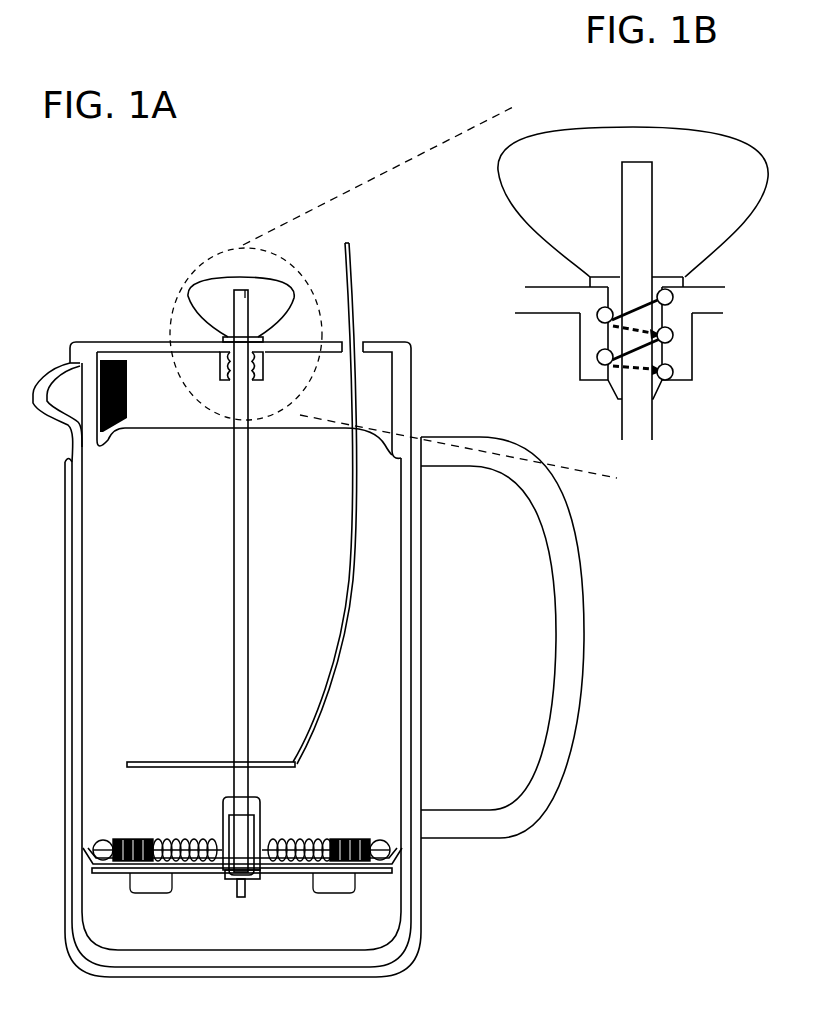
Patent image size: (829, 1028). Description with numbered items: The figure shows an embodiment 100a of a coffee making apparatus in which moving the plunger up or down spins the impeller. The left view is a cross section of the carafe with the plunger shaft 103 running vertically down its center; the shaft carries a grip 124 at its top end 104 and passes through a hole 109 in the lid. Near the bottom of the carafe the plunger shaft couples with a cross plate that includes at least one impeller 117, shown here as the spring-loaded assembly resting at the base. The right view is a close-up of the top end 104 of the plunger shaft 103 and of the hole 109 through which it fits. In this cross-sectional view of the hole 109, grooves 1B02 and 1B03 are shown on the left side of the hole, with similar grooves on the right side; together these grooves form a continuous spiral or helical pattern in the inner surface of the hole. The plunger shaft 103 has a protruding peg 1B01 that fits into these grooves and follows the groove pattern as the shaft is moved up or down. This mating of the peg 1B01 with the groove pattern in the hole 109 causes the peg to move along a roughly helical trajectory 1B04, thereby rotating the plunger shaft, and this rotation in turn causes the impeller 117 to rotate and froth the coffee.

In FIG. 1A, the embodiment 100a is at (257, 200).
In FIG. 1A, the plunger shaft 103 is at (237, 623).
In FIG. 1B, the plunger shaft 103 is at (632, 435).
In FIG. 1A, the top end 104 is at (245, 290).
In FIG. 1A, the hole 109 is at (192, 290).
In FIG. 1B, the hole 109 is at (620, 290).
In FIG. 1A, the impeller 117 is at (337, 882).
In FIG. 1A, the grip 124 is at (262, 282).
In FIG. 1B, the peg 1B01 is at (670, 298).
In FIG. 1B, the groove 1B02 is at (600, 318).
In FIG. 1B, the groove 1B03 is at (600, 358).
In FIG. 1B, the helical trajectory 1B04 is at (610, 303).